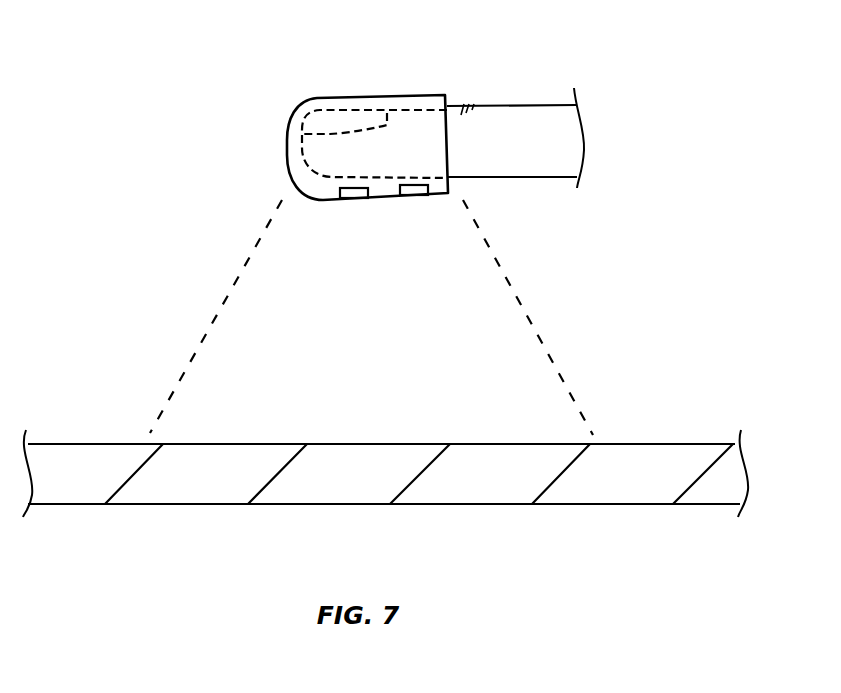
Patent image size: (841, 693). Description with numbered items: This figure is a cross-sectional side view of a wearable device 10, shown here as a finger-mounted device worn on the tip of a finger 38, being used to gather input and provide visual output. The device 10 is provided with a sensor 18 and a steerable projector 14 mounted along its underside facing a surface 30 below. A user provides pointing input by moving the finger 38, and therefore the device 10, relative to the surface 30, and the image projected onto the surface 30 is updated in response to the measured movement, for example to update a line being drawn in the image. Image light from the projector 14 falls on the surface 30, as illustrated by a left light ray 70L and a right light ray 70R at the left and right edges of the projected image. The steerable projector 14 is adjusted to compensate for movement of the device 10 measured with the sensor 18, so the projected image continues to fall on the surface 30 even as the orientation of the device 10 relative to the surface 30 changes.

The wearable device 10 is at (346, 98).
The finger 38 is at (508, 120).
The steerable projector 14 is at (353, 196).
The sensor 18 is at (415, 194).
The left light ray 70L is at (218, 318).
The right light ray 70R is at (512, 287).
The surface 30 is at (575, 488).